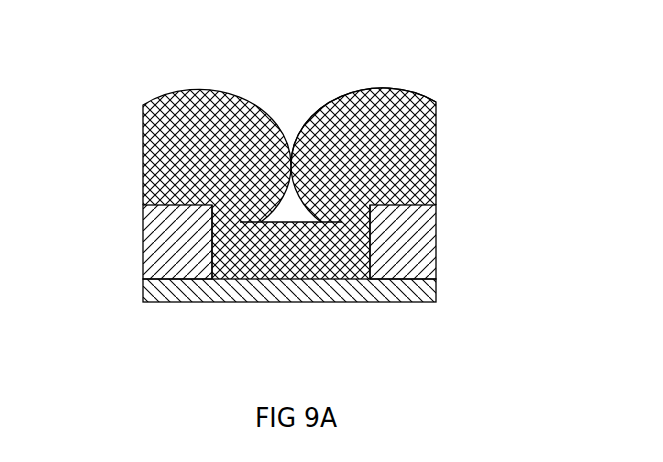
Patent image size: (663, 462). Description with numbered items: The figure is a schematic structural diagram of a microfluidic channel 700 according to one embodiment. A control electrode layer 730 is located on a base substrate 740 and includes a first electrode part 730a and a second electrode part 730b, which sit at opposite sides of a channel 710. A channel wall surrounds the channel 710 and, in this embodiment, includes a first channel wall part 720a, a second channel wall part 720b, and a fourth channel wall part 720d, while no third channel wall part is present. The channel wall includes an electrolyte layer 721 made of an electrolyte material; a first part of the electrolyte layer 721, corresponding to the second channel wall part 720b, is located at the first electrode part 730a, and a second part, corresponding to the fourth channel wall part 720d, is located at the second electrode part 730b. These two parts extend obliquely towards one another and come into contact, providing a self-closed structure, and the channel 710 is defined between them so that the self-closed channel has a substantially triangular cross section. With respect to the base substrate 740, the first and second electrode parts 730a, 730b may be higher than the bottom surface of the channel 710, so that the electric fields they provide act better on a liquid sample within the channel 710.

The microfluidic channel 700 is at (298, 211).
The channel 710 is at (292, 214).
The first channel wall part 720a is at (335, 262).
The second channel wall part 720b is at (428, 146).
The fourth channel wall part 720d is at (145, 177).
The electrolyte layer 721 is at (432, 181).
The control electrode layer 730 is at (298, 295).
The first electrode part 730a is at (413, 252).
The second electrode part 730b is at (142, 250).
The base substrate 740 is at (431, 302).